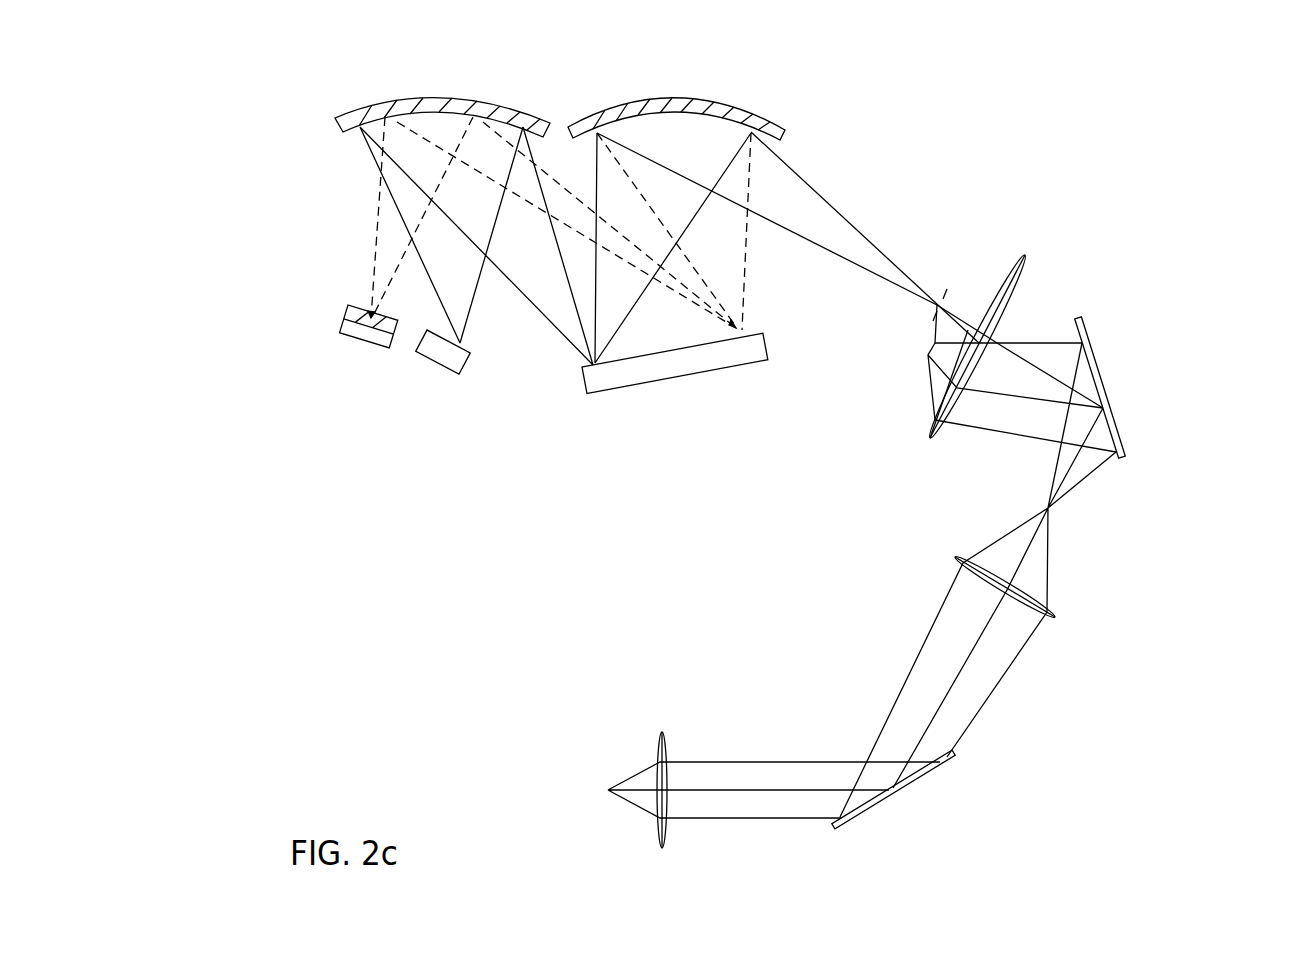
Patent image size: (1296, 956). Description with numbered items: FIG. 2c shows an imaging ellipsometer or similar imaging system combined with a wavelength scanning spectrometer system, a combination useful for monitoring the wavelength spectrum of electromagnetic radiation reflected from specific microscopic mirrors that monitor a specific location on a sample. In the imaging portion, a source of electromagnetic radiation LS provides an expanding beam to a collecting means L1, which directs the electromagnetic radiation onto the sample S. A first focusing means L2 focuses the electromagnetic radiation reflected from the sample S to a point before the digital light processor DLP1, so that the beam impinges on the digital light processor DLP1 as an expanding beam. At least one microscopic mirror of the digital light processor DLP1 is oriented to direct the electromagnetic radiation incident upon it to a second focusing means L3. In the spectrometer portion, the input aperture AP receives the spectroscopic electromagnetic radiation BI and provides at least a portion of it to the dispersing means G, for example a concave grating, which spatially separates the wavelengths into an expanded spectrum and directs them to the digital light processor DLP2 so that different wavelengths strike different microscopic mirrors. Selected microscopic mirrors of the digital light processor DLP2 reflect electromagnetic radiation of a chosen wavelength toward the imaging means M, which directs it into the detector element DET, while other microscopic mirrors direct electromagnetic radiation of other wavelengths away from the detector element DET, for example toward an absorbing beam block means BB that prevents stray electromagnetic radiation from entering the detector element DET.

The imaging means M is at (433, 89).
The dispersing means G is at (640, 95).
The beam block means BB is at (362, 352).
The detector element DET is at (462, 390).
The digital light processor DLP2 is at (683, 395).
The spectroscopic electromagnetic radiation BI is at (857, 278).
The input aperture AP is at (936, 288).
The second focusing means L3 is at (1042, 261).
The digital light processor DLP1 is at (1121, 388).
The first focusing means L2 is at (1071, 633).
The sample S is at (917, 800).
The source of electromagnetic radiation LS is at (755, 790).
The collecting means L1 is at (665, 722).